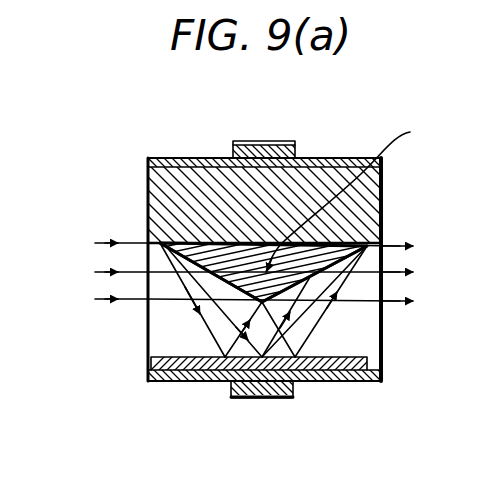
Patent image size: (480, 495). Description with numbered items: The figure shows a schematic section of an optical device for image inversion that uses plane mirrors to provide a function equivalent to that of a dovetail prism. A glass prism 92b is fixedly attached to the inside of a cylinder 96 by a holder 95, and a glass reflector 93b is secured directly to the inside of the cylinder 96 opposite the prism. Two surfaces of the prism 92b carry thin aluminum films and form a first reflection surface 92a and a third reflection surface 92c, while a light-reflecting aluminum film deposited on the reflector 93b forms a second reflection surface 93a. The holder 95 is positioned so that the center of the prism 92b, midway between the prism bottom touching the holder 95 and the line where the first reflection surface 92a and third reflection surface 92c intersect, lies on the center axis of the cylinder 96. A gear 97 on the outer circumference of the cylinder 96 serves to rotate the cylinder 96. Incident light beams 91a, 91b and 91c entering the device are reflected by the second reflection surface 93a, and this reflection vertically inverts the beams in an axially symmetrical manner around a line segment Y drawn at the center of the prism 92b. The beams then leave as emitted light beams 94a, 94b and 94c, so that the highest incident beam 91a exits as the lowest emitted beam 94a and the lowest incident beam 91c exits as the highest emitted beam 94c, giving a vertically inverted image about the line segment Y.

The incident light beam 91a is at (113, 241).
The incident light beam 91b is at (94, 270).
The incident light beam 91c is at (93, 298).
The first reflection surface 92a is at (182, 250).
The prism 92b is at (206, 245).
The third reflection surface 92c is at (352, 264).
The second reflection surface 93a is at (180, 357).
The reflector 93b is at (186, 384).
The emitted light beam 94a is at (387, 305).
The emitted light beam 94b is at (387, 274).
The emitted light beam 94c is at (395, 246).
The holder 95 is at (384, 187).
The cylinder 96 is at (347, 160).
The gear 97 is at (272, 141).
The line segment Y is at (346, 194).